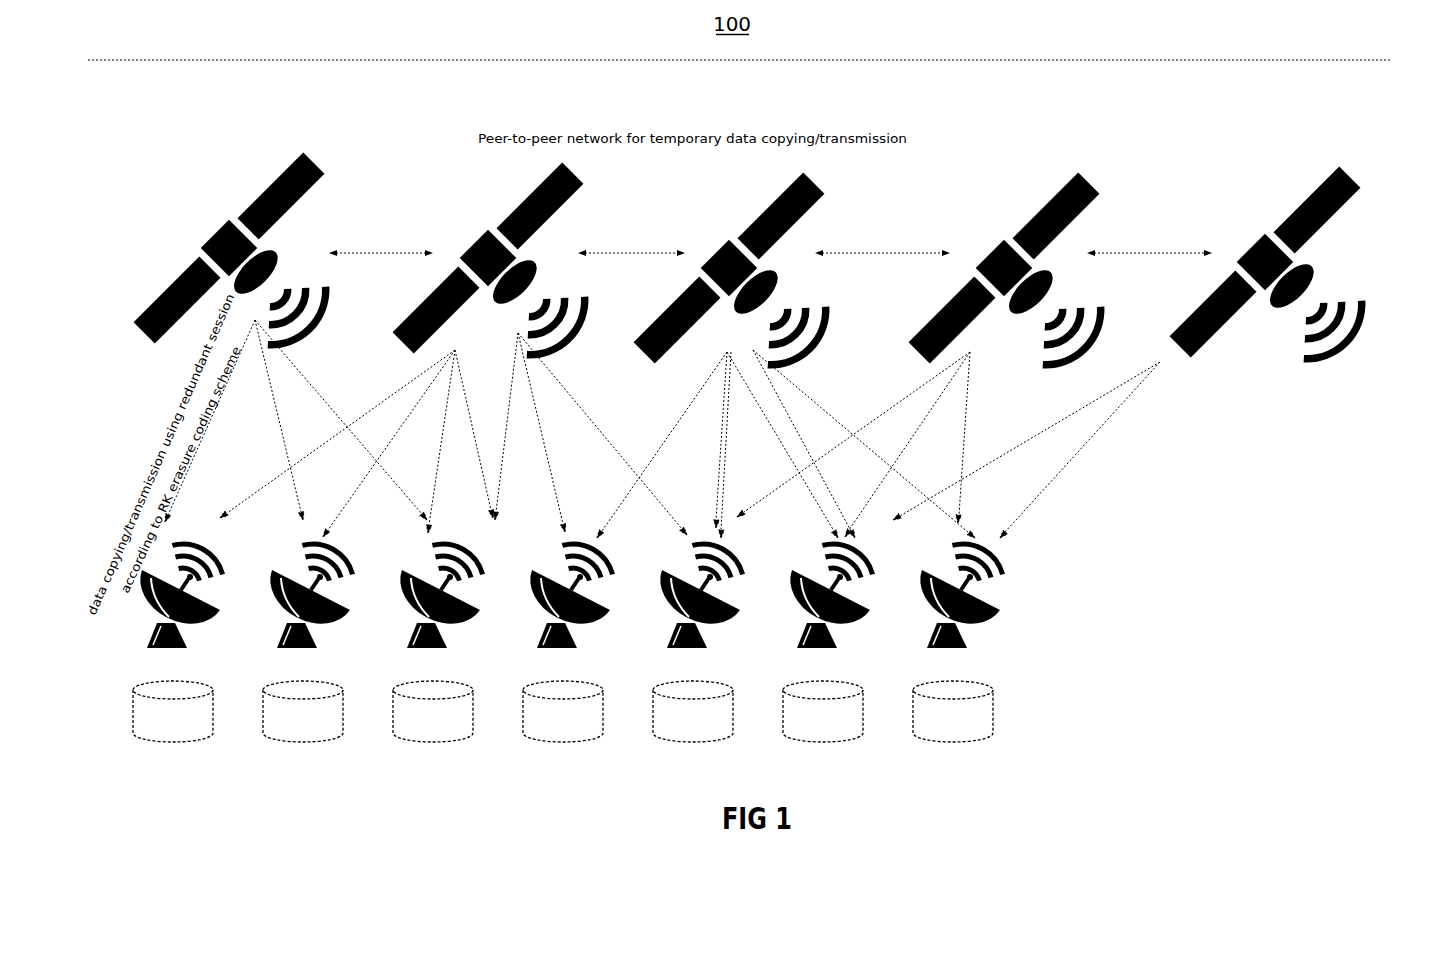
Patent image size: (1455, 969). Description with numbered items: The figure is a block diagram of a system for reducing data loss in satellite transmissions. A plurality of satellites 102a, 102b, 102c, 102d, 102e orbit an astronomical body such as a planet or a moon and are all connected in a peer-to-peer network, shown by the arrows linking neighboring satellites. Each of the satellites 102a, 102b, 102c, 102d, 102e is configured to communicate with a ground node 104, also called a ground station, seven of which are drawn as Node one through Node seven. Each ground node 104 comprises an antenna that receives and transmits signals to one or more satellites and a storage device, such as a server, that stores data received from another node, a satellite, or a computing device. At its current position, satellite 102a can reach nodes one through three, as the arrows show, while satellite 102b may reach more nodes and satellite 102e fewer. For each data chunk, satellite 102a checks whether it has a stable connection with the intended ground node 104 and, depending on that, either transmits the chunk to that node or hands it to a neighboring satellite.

The satellite 102a is at (321, 172).
The satellite 102b is at (584, 188).
The satellite 102c is at (828, 194).
The satellite 102d is at (1099, 192).
The satellite 102e is at (1362, 192).
The ground node 104 is at (1010, 704).